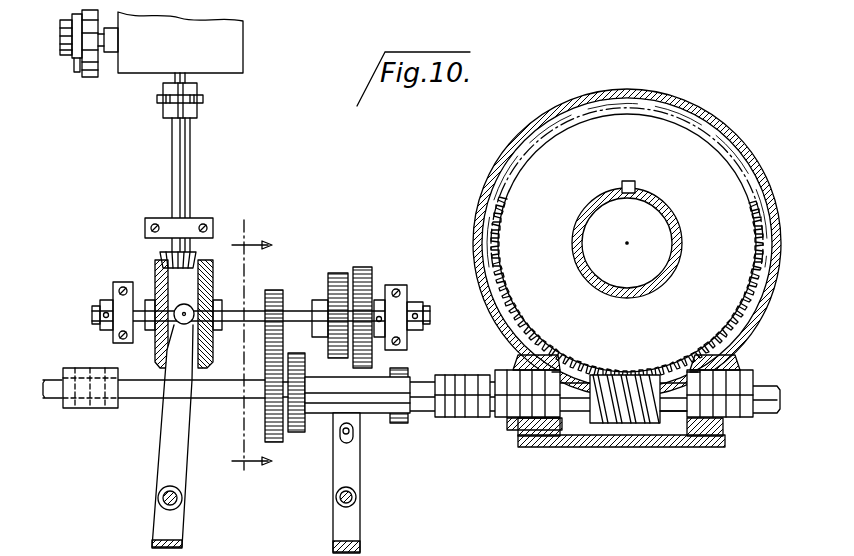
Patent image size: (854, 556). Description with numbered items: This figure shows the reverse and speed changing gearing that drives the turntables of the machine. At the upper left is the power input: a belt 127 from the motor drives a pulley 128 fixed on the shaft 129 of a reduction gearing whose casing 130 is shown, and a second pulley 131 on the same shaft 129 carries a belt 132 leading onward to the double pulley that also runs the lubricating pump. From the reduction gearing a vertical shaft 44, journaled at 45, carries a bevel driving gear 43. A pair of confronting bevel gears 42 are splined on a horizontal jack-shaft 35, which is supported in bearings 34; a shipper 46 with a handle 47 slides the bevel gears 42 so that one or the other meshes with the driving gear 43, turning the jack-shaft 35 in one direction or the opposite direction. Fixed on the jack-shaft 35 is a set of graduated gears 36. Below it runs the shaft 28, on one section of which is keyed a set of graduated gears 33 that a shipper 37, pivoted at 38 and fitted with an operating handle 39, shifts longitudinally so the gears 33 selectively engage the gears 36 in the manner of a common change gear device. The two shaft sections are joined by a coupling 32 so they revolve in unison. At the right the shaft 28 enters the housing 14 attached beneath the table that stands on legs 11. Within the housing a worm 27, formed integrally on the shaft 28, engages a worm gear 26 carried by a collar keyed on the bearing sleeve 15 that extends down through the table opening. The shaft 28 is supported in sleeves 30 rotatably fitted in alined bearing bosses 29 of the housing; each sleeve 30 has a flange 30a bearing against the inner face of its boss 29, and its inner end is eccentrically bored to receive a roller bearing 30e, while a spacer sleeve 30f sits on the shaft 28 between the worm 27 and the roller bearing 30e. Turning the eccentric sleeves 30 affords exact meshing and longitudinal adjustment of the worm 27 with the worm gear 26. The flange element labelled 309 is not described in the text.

The legs 11 is at (257, 353).
The housing 14 is at (478, 213).
The bearing sleeve 15 is at (670, 275).
The worm gear 26 is at (708, 157).
The worm 27 is at (633, 423).
The shaft 28 is at (43, 388).
The bearing boss 29 is at (533, 438).
The sleeve 30 is at (508, 422).
The flange 30a is at (558, 370).
The roller bearing 30e is at (690, 368).
The spacer sleeve 30f is at (673, 430).
The bearing flange 309 is at (508, 377).
The coupling 32 is at (85, 410).
The graduated gears 33 is at (297, 438).
The bearings 34 is at (112, 293).
The jack-shaft 35 is at (295, 318).
The graduated gears 36 is at (272, 290).
The shipper 37 is at (372, 417).
The pivot 38 is at (356, 497).
The operating handle 39 is at (362, 547).
The bevel gears 42 is at (157, 355).
The driving gear 43 is at (160, 262).
The vertical shaft 44 is at (186, 172).
The journal 45 is at (162, 227).
The shipper 46 is at (165, 432).
The handle 47 is at (152, 542).
The belt 127 is at (88, 22).
The pulley 128 is at (90, 77).
The shaft 129 is at (106, 40).
The casing 130 is at (235, 49).
The second pulley 131 is at (71, 58).
The belt 132 is at (64, 16).